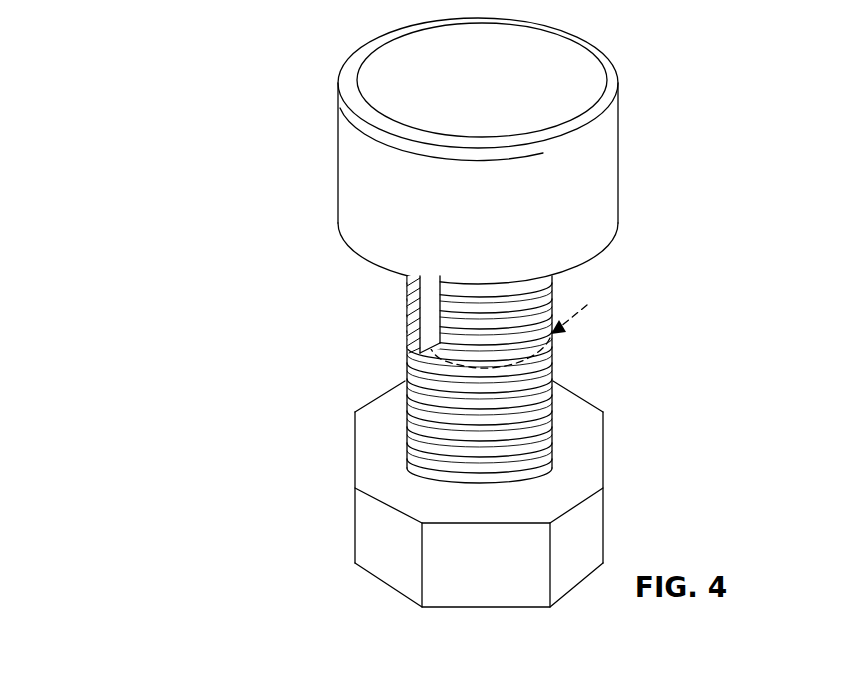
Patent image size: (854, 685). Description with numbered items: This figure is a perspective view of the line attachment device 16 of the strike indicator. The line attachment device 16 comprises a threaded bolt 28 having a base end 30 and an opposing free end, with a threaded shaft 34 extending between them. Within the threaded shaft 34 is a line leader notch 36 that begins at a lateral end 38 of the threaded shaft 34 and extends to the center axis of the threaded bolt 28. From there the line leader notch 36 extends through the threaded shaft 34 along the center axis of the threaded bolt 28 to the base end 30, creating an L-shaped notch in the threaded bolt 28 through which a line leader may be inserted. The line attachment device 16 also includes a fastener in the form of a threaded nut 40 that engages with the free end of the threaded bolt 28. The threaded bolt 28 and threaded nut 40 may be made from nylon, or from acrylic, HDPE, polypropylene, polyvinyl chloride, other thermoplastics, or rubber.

The line attachment device 16 is at (406, 312).
The threaded bolt 28 is at (474, 250).
The base end 30 is at (352, 163).
The threaded shaft 34 is at (404, 371).
The line leader notch 36 is at (383, 314).
The lateral end 38 is at (550, 350).
The threaded nut 40 is at (590, 530).